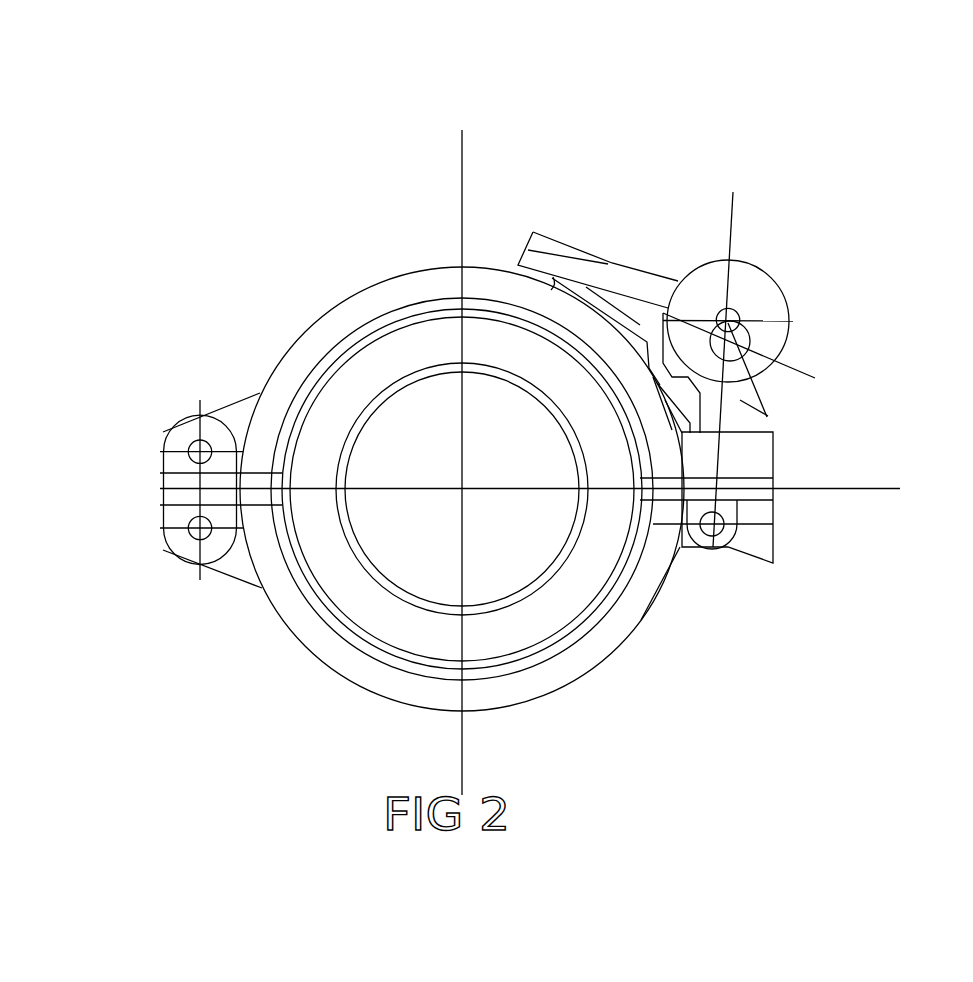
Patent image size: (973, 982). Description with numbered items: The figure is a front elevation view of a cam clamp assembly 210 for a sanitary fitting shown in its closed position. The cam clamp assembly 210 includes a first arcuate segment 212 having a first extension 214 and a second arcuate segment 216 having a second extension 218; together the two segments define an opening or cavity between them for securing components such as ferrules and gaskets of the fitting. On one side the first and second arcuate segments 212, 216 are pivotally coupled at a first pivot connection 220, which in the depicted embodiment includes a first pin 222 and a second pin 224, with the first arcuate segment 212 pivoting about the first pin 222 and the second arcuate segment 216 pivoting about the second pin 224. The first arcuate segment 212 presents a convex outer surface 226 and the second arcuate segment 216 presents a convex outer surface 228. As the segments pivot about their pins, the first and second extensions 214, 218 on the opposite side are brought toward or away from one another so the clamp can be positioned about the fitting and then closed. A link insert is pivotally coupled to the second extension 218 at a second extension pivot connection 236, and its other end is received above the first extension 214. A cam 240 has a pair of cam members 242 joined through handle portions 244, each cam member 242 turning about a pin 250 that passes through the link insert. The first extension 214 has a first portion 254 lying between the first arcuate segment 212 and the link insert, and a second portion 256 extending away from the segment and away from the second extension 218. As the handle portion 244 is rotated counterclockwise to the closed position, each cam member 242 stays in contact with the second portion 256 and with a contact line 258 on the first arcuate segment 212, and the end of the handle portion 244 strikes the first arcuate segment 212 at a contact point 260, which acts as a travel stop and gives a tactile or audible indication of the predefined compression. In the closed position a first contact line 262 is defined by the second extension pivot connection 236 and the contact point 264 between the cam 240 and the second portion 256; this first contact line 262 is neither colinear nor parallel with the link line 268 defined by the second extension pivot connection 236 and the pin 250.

The cam clamp assembly 210 is at (718, 175).
The first arcuate segment 212 is at (288, 321).
The first extension 214 is at (787, 455).
The second arcuate segment 216 is at (312, 675).
The second extension 218 is at (797, 548).
The first pivot connection 220 is at (122, 552).
The first pin 222 is at (197, 443).
The second pin 224 is at (210, 533).
The convex outer surface 226 is at (473, 263).
The convex outer surface 228 is at (625, 640).
The second extension pivot connection 236 is at (713, 547).
The cam 240 is at (760, 228).
The cam member 242 is at (790, 300).
The handle portion 244 is at (552, 246).
The pin 250 is at (800, 318).
The first portion 254 is at (708, 420).
The second portion 256 is at (765, 440).
The contact line 258 is at (652, 380).
The contact point 260 is at (555, 292).
The first contact line 262 is at (772, 500).
The contact point 264 is at (778, 368).
The link line 268 is at (710, 457).